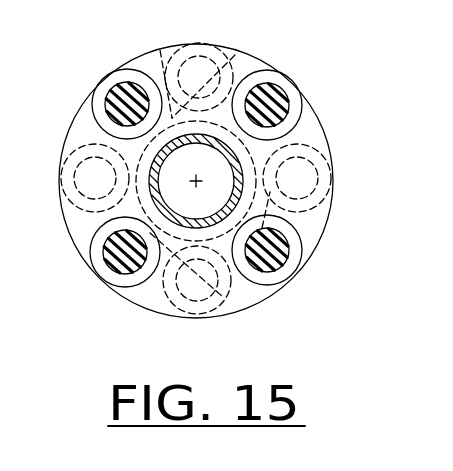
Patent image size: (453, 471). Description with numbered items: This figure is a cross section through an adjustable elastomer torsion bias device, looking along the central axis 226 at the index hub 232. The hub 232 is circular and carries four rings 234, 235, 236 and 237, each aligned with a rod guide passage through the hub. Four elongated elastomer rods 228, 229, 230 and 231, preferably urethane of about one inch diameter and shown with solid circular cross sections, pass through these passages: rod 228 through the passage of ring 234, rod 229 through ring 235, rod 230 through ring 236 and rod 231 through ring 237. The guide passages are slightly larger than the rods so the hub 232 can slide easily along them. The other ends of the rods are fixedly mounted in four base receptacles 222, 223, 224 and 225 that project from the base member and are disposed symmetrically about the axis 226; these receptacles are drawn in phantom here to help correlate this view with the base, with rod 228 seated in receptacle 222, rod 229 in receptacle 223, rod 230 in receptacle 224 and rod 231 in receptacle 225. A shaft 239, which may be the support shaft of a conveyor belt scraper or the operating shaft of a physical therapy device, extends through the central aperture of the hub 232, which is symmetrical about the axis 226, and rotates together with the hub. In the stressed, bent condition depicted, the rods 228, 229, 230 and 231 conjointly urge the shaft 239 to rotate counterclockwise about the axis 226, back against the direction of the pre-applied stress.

The base receptacle 222 is at (233, 55).
The base receptacle 223 is at (317, 143).
The base receptacle 224 is at (153, 330).
The base receptacle 225 is at (74, 219).
The central axis 226 is at (197, 180).
The elastomer rod 228 is at (287, 95).
The elastomer rod 229 is at (277, 259).
The elastomer rod 230 is at (113, 273).
The elastomer rod 231 is at (105, 118).
The index hub 232 is at (245, 298).
The ring 234 is at (296, 108).
The ring 235 is at (273, 284).
The ring 236 is at (98, 256).
The ring 237 is at (117, 78).
The shaft 239 is at (163, 60).